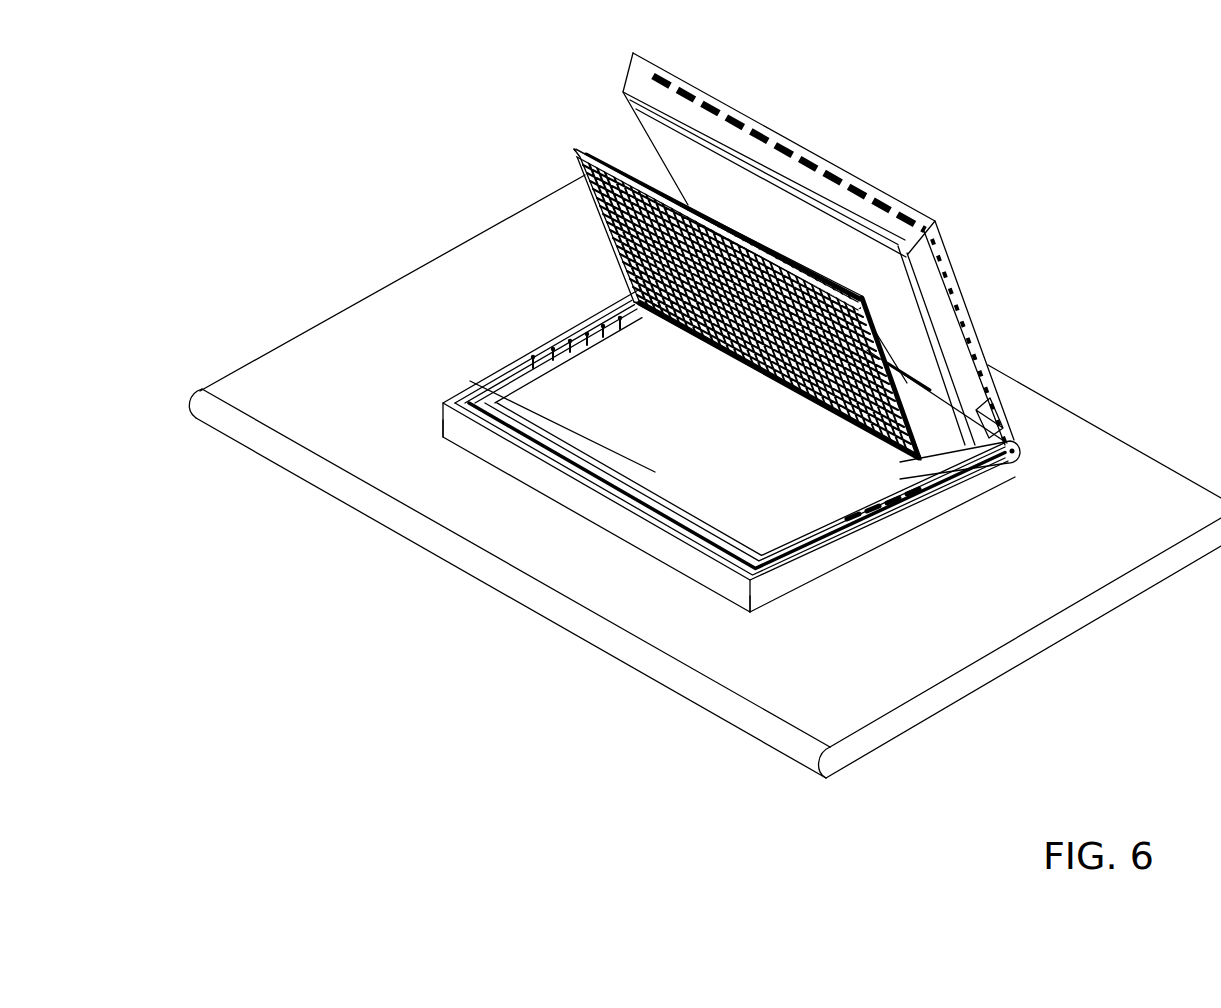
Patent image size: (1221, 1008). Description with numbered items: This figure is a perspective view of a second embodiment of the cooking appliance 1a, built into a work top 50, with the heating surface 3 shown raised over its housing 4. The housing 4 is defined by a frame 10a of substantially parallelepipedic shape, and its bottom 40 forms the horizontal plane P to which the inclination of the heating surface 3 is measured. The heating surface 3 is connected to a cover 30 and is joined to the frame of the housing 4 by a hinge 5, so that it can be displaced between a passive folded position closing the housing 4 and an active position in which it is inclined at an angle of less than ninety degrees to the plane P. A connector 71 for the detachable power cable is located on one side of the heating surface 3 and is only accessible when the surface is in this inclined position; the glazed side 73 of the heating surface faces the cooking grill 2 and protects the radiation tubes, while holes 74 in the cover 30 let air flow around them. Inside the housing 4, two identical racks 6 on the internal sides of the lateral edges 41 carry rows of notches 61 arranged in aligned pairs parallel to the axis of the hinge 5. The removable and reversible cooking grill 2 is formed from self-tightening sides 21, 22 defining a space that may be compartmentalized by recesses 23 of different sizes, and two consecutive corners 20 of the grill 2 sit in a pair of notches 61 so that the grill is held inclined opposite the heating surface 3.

The cooking appliance 1a is at (772, 366).
The cooking grill 2 is at (572, 150).
The heating surface 3 is at (898, 342).
The housing 4 is at (782, 581).
The hinge 5 is at (1018, 460).
The rack 6 is at (540, 365).
The frame 10a is at (713, 570).
The corner 20 is at (655, 322).
The side 21 is at (620, 150).
The side 22 is at (592, 230).
The recess 23 is at (877, 320).
The cover 30 is at (742, 112).
The bottom 40 is at (578, 418).
The lateral edge 41 is at (563, 342).
The work top 50 is at (335, 443).
The notch 61 is at (615, 305).
The connector 71 is at (997, 398).
The glazed side 73 is at (817, 237).
The hole 74 is at (910, 203).
The horizontal plane P is at (570, 543).